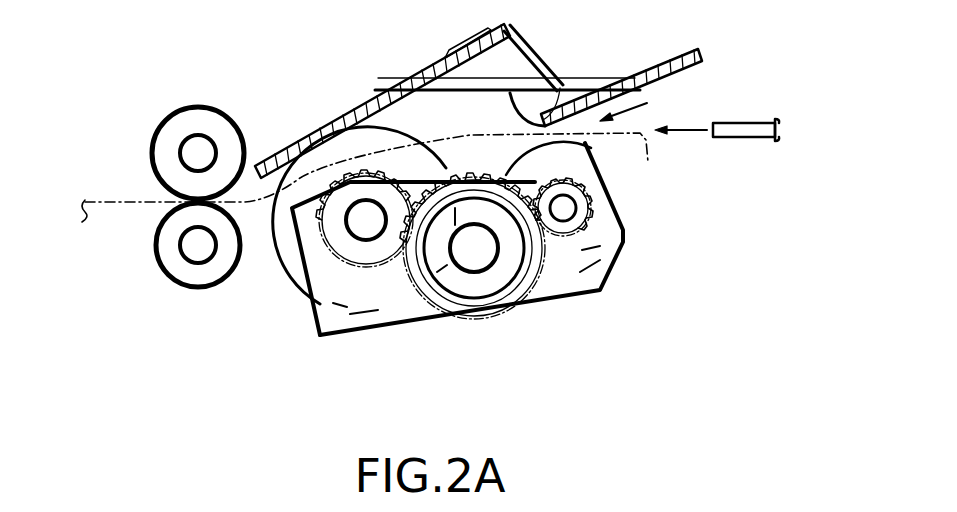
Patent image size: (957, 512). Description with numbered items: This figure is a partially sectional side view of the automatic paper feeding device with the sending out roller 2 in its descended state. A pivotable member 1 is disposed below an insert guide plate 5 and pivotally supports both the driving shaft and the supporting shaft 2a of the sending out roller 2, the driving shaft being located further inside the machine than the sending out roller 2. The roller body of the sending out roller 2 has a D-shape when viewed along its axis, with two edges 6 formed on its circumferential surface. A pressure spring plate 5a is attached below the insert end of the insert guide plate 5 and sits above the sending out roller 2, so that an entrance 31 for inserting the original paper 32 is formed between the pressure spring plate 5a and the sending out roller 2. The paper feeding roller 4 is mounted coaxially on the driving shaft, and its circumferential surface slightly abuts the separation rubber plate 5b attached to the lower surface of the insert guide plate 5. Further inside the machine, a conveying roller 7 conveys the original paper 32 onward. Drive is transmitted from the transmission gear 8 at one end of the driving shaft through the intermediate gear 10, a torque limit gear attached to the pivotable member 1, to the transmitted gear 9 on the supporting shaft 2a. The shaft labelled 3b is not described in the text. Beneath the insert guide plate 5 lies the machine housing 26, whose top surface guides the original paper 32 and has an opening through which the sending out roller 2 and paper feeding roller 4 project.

The pivotable member 1 is at (346, 327).
The sending out roller 2 is at (622, 212).
The supporting shaft 2a is at (576, 222).
The shaft 3b is at (362, 230).
The paper feeding roller 4 is at (285, 270).
The insert guide plate 5 is at (606, 78).
The pressure spring plate 5a is at (562, 90).
The separation rubber plate 5b is at (392, 91).
The edge 6 is at (628, 208).
The conveying roller 7 is at (206, 116).
The transmission gear 8 is at (378, 262).
The transmitted gear 9 is at (618, 262).
The intermediate gear 10 is at (492, 318).
The machine housing 26 is at (110, 197).
The entrance 31 is at (639, 106).
The original paper 32 is at (745, 122).